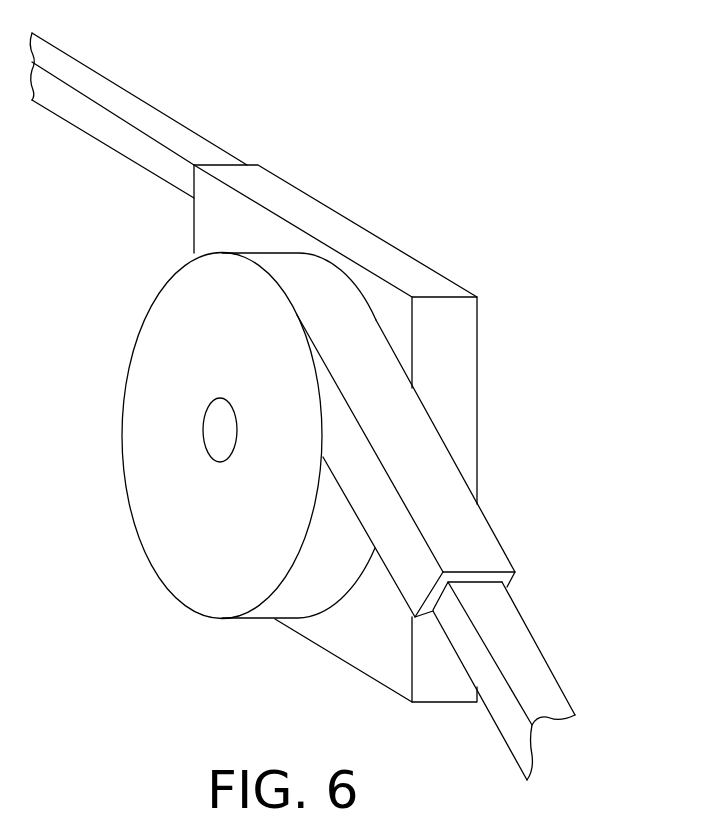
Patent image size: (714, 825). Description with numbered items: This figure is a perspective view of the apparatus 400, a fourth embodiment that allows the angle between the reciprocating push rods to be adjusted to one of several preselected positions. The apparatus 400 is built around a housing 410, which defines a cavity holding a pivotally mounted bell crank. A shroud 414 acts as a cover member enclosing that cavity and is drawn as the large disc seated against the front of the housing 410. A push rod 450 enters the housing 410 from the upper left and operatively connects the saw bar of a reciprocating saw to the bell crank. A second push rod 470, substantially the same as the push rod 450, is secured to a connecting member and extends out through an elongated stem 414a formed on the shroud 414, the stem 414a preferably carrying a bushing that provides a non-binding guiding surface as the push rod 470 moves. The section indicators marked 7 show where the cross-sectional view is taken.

The apparatus 400 is at (418, 230).
The housing 410 is at (458, 340).
The shroud 414 is at (182, 540).
The elongated stem 414a is at (485, 555).
The push rod 450 is at (80, 77).
The second push rod 470 is at (522, 658).
The section line 7- 7 is at (188, 177).